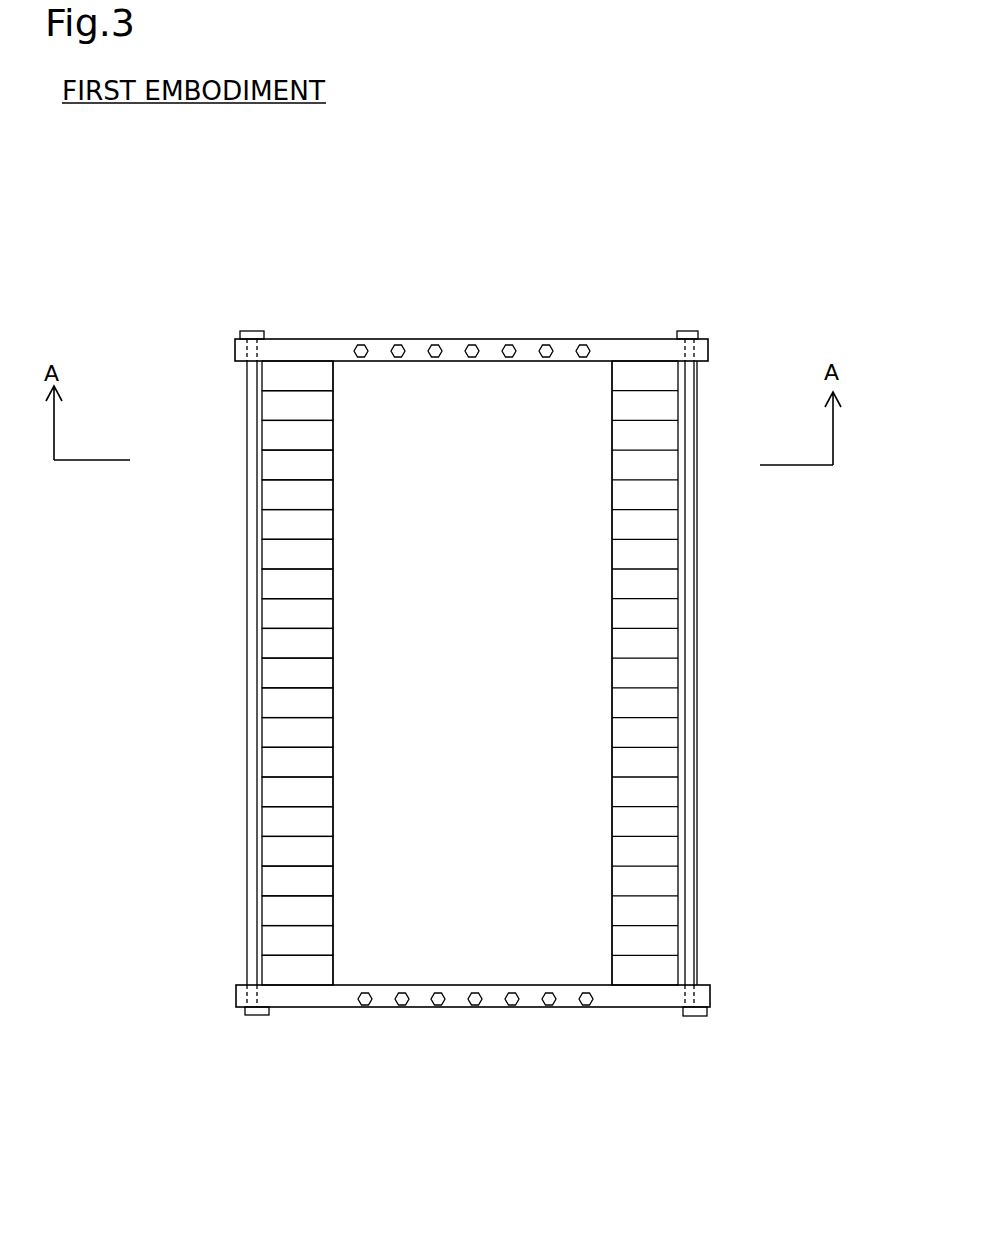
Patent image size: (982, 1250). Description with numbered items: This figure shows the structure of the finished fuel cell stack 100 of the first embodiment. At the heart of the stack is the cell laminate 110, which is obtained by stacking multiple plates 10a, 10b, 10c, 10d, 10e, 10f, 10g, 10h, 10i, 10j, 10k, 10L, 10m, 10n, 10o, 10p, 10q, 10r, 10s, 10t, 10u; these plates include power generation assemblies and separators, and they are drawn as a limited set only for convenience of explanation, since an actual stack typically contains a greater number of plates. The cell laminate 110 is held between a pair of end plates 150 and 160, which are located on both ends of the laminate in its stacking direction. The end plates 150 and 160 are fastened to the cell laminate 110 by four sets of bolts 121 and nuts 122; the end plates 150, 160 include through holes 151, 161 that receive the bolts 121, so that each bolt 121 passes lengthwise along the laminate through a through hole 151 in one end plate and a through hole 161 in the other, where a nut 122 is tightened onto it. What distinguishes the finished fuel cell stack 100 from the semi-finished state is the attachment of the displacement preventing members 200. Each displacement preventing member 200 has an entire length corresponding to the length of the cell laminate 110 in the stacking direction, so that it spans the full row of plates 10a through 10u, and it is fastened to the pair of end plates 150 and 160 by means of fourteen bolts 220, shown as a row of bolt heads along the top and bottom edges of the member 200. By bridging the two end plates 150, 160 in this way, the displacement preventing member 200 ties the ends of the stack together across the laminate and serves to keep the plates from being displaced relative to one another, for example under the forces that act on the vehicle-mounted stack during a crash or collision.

The fuel cell stack 100 is at (662, 255).
The cell laminate 110 is at (167, 360).
The plate 10a is at (290, 374).
The plate 10b is at (290, 404).
The plate 10c is at (290, 433).
The plate 10d is at (290, 463).
The plate 10e is at (290, 493).
The plate 10f is at (290, 522).
The plate 10g is at (290, 552).
The plate 10h is at (290, 582).
The plate 10i is at (290, 611).
The plate 10j is at (290, 641).
The plate 10k is at (290, 670).
The plate 10L is at (290, 700).
The plate 10m is at (290, 730).
The plate 10n is at (290, 760).
The plate 10o is at (290, 789).
The plate 10p is at (290, 819).
The plate 10q is at (290, 848).
The plate 10r is at (290, 878).
The plate 10s is at (290, 908).
The plate 10t is at (290, 937).
The plate 10u is at (290, 967).
The bolt 121 is at (688, 331).
The nut 122 is at (700, 1017).
The end plate 150 is at (292, 345).
The through hole 151 is at (710, 345).
The end plate 160 is at (296, 1000).
The through hole 161 is at (712, 993).
The displacement preventing member 200 is at (497, 483).
The bolt 220 is at (361, 339).